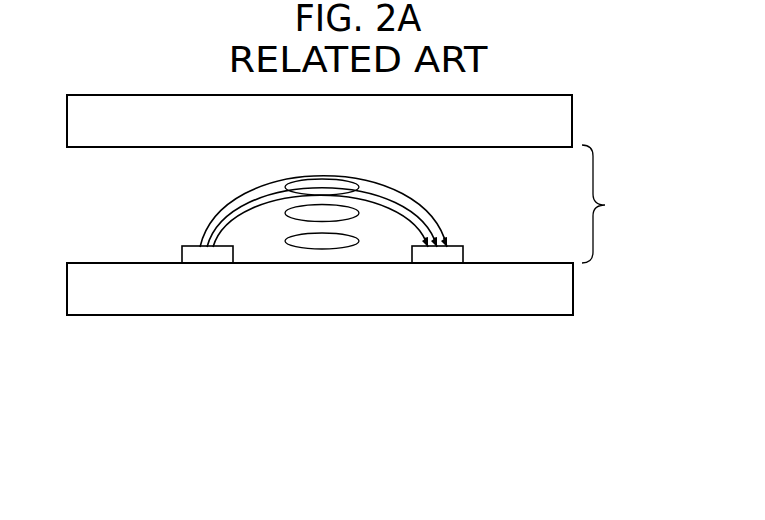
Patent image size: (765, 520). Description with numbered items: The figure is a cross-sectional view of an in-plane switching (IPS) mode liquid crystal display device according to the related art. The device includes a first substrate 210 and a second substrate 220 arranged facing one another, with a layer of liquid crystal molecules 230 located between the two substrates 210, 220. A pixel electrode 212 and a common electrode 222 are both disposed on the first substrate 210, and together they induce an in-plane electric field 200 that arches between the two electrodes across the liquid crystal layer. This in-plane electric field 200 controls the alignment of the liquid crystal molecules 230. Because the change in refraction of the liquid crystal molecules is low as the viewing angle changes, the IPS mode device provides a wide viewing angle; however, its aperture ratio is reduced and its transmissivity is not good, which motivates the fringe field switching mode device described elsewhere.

The in-plane electric field 200 is at (409, 198).
The first substrate 210 is at (560, 298).
The pixel electrode 212 is at (203, 257).
The second substrate 220 is at (559, 130).
The common electrode 222 is at (442, 255).
The layer of liquid crystal molecules 230 is at (622, 204).